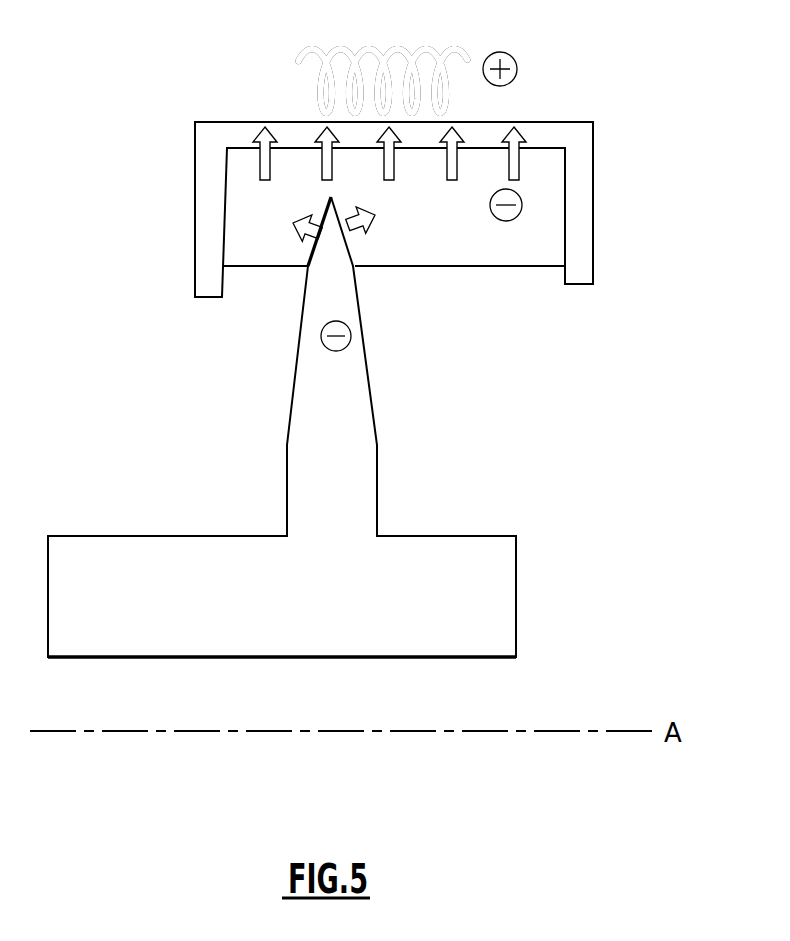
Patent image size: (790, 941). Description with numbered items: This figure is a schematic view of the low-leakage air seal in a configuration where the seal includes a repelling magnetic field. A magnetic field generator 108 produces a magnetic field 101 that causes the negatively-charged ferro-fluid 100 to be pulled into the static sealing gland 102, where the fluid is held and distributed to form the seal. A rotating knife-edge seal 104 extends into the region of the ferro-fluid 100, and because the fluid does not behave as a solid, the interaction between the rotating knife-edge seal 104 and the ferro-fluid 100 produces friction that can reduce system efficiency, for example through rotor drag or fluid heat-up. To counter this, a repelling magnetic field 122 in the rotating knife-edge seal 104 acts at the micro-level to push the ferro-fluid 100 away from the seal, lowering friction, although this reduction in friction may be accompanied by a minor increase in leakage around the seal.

The ferro-fluid 100 is at (489, 254).
The magnetic field 101 is at (514, 139).
The static sealing gland 102 is at (593, 191).
The rotating knife-edge seal 104 is at (363, 415).
The magnetic field generator 108 is at (415, 51).
The repelling magnetic field 122 is at (376, 229).